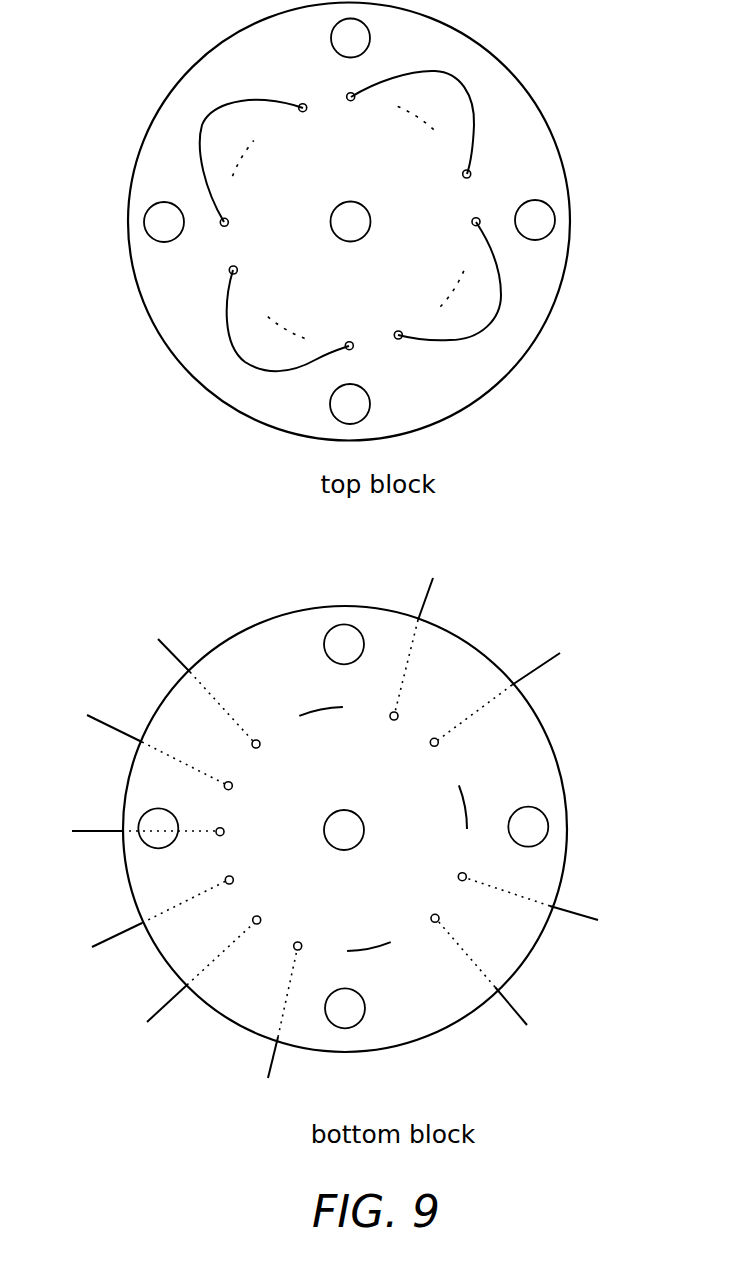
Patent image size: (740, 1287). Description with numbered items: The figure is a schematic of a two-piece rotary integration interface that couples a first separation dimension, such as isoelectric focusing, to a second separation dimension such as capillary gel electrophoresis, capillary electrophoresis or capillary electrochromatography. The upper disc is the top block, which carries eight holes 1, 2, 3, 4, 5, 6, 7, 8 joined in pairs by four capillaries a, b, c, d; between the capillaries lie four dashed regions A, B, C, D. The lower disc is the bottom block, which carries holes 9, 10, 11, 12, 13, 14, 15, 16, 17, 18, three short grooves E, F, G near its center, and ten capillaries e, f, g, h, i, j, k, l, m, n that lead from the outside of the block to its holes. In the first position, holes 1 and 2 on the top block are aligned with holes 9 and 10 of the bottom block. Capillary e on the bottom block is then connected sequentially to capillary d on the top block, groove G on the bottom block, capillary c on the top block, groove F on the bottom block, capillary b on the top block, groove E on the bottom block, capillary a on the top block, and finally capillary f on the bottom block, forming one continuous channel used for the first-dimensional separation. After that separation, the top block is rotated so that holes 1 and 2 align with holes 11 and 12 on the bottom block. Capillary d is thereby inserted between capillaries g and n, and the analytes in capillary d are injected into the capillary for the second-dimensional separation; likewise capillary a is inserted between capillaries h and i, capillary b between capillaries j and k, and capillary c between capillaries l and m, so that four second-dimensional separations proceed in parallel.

The hole 1 is at (243, 270).
The hole 2 is at (236, 221).
The hole 3 is at (304, 123).
The hole 4 is at (353, 116).
The hole 5 is at (454, 177).
The hole 6 is at (464, 225).
The hole 7 is at (397, 319).
The hole 8 is at (347, 331).
The hole 9 is at (242, 877).
The hole 10 is at (238, 832).
The hole 11 is at (245, 788).
The hole 12 is at (272, 752).
The hole 13 is at (380, 729).
The hole 14 is at (417, 754).
The hole 15 is at (444, 875).
The hole 16 is at (418, 918).
The hole 17 is at (305, 932).
The hole 18 is at (271, 907).
The capillary a is at (239, 161).
The capillary b is at (412, 110).
The capillary c is at (459, 281).
The capillary d is at (288, 333).
The coil section A (dashed arc) A is at (287, 319).
The coil section B (dashed arc) B is at (250, 163).
The coil section C (dashed arc) C is at (417, 126).
The coil section D (dashed arc) D is at (448, 286).
The capillary e is at (146, 922).
The capillary f is at (135, 833).
The capillary g is at (144, 741).
The capillary h is at (197, 680).
The capillary i is at (421, 633).
The capillary j is at (507, 689).
The capillary k is at (545, 908).
The capillary l is at (490, 983).
The capillary m is at (270, 1025).
The capillary n is at (188, 983).
The groove E is at (321, 698).
The groove F is at (474, 807).
The groove G is at (370, 962).